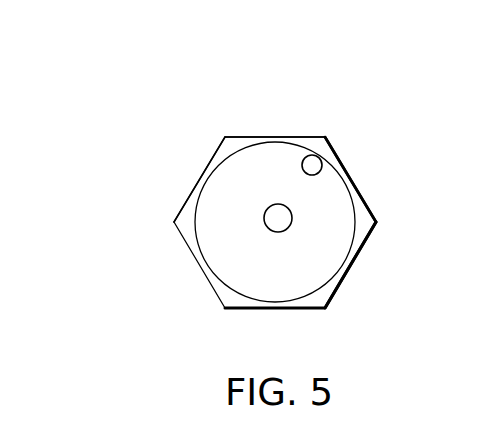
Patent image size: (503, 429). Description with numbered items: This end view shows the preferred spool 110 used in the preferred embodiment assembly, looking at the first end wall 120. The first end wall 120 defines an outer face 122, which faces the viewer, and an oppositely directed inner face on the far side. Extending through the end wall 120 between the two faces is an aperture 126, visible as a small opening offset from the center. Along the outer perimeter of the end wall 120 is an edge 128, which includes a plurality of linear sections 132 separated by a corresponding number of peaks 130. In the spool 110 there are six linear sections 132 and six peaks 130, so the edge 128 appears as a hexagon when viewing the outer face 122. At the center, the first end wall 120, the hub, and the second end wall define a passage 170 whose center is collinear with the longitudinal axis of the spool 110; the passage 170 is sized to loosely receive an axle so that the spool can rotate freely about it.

The spool 110 is at (119, 96).
The first end wall 120 is at (212, 188).
The outer face 122 is at (223, 245).
The aperture 126 is at (307, 157).
The edge 128 is at (242, 137).
The peaks 130 is at (225, 137).
The linear sections 132 is at (288, 135).
The passage 170 is at (272, 227).